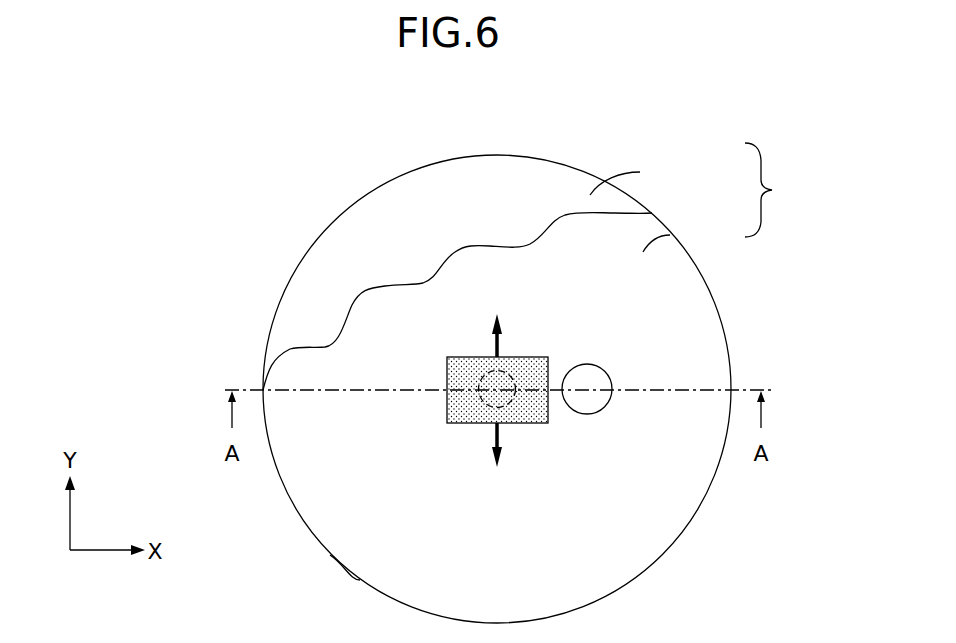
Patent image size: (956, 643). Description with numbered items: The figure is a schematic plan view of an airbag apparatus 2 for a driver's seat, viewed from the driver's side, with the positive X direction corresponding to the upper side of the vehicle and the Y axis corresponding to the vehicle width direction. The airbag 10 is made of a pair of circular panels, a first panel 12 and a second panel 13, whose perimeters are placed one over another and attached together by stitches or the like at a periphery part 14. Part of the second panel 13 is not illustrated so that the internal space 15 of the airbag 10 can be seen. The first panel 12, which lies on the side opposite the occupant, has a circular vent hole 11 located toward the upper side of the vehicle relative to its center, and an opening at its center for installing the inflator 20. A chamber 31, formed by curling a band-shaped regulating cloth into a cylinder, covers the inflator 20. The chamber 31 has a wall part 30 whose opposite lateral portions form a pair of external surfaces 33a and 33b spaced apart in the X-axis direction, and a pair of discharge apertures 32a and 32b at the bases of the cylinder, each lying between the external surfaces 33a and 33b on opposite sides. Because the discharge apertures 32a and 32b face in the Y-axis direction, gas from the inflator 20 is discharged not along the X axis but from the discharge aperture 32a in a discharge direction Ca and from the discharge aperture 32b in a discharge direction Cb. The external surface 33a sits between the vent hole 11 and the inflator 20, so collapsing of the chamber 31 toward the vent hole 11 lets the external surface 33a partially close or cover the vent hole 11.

The airbag apparatus 2 is at (251, 138).
The airbag 10 is at (774, 190).
The vent hole 11 is at (604, 374).
The first panel 12 is at (643, 252).
The second panel 13 is at (590, 195).
The periphery part 14 is at (323, 232).
The internal space 15 is at (350, 548).
The inflator 20 is at (478, 404).
The wall part 30 is at (473, 367).
The chamber 31 is at (478, 338).
The discharge aperture 32a is at (516, 350).
The discharge aperture 32b is at (516, 430).
The external surface 33a is at (548, 414).
The external surface 33b is at (447, 414).
The discharge direction Ca is at (499, 340).
The discharge direction Cb is at (499, 442).